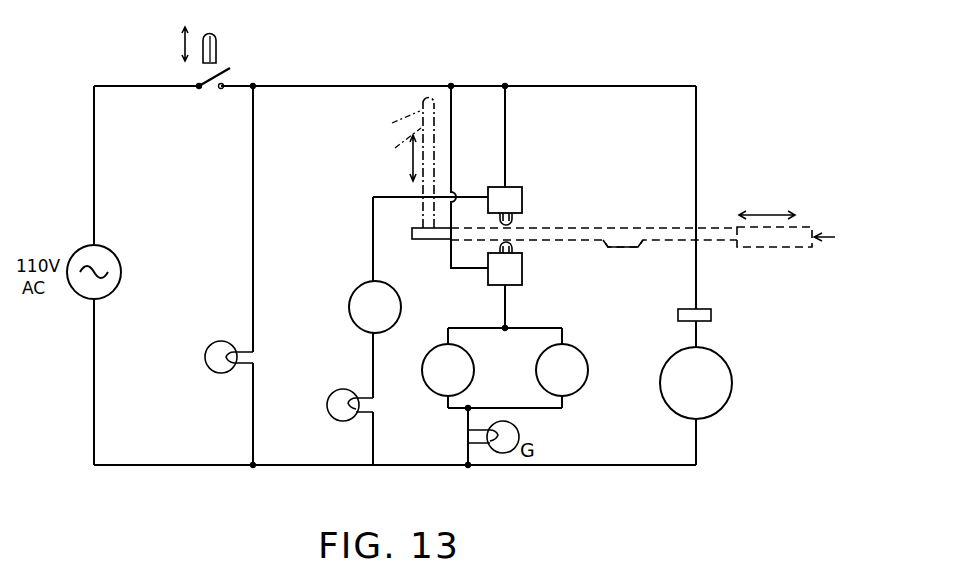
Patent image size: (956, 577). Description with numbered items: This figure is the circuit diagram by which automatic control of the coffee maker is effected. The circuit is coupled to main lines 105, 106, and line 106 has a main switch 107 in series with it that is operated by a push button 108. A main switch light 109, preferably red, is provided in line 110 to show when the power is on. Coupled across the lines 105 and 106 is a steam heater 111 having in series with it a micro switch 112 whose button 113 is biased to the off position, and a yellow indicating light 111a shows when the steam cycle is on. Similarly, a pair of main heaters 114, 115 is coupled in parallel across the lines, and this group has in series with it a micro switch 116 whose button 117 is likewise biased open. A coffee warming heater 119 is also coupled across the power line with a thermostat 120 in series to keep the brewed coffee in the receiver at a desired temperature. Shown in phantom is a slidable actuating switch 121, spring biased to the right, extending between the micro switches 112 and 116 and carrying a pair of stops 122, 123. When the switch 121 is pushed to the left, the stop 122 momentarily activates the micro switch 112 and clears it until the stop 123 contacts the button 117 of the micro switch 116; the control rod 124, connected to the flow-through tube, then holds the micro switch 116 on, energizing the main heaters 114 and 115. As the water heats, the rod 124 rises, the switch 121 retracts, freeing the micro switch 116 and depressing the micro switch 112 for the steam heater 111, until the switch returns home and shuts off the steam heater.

The main line 105 is at (147, 467).
The main line 106 is at (126, 84).
The main switch 107 is at (228, 83).
The push button 108 is at (219, 46).
The main switch light 109 is at (205, 349).
The line 110 is at (252, 172).
The steam heater 111 is at (348, 307).
The yellow indicating light 111a is at (327, 408).
The micro switch 112 is at (510, 186).
The button 113 is at (500, 222).
The main heater 114 is at (431, 389).
The main heater 115 is at (578, 388).
The micro switch 116 is at (492, 287).
The button 117 is at (512, 248).
The coffee warming heater 119 is at (733, 395).
The thermostat 120 is at (712, 316).
The slidable actuating switch 121 is at (803, 226).
The stop 122 is at (588, 231).
The stop 123 is at (638, 248).
The control rod 124 is at (365, 163).